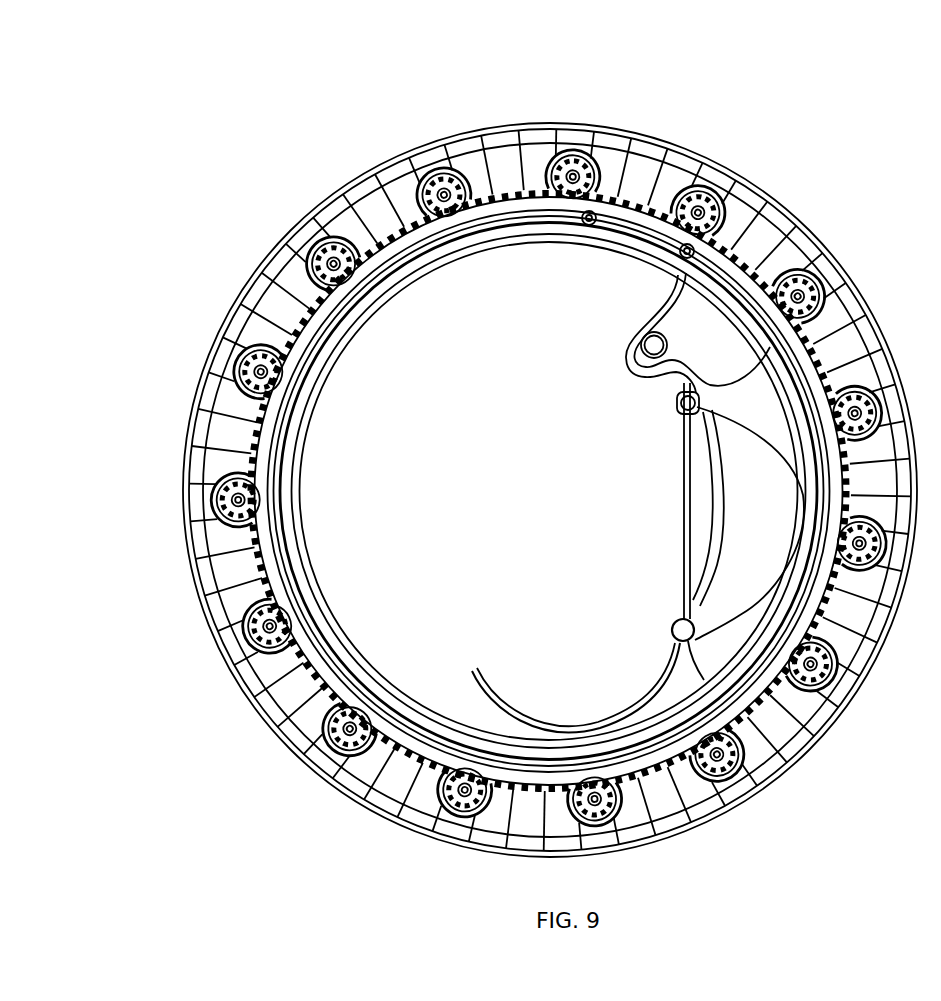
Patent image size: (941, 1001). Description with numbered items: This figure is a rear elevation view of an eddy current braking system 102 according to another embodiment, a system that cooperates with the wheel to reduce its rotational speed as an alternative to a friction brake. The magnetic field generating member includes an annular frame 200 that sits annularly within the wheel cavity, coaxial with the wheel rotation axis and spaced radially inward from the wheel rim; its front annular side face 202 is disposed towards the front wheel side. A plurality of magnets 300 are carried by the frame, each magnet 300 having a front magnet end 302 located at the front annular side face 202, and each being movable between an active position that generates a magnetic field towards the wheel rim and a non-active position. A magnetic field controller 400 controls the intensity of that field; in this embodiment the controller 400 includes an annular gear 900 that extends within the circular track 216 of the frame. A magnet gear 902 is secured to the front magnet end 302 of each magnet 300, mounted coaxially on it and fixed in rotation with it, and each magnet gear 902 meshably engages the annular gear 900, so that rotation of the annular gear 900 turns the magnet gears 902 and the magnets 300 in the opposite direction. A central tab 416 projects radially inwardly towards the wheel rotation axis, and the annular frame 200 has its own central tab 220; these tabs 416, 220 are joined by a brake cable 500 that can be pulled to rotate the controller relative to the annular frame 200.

The eddy current braking system 102 is at (163, 217).
The annular frame 200 is at (850, 268).
The front annular side face 202 is at (680, 182).
The circular track 216 is at (498, 238).
The central tab 220 is at (703, 612).
The magnet 300 is at (329, 238).
The front magnet end 302 is at (317, 267).
The magnetic field controller 400 is at (318, 427).
The central tab 416 is at (732, 410).
The brake cable 500 is at (683, 511).
The annular gear 900 is at (413, 252).
The magnet gear 902 is at (442, 182).